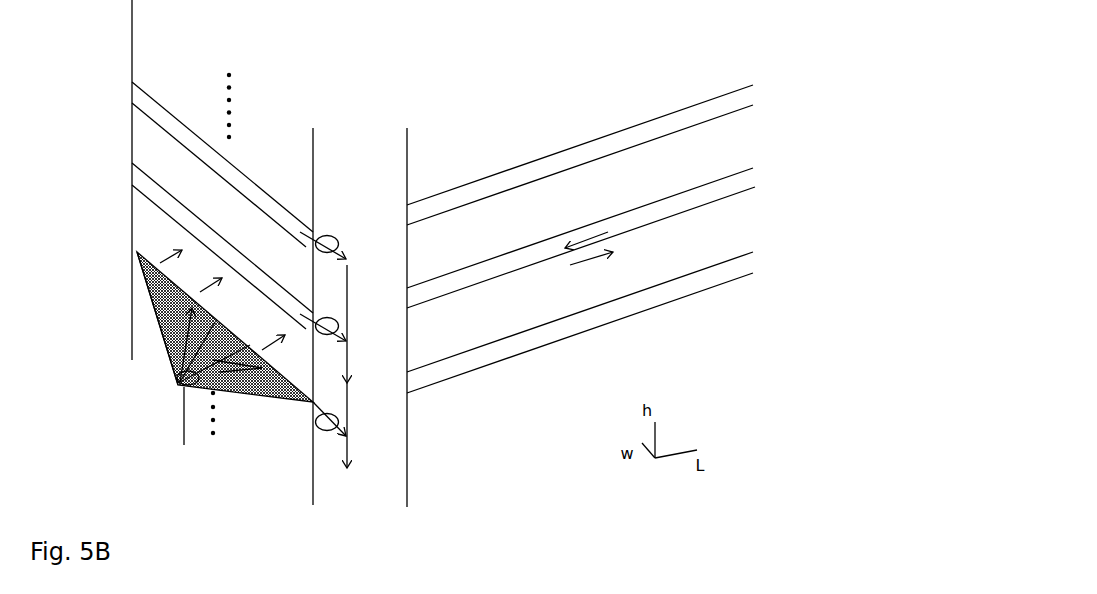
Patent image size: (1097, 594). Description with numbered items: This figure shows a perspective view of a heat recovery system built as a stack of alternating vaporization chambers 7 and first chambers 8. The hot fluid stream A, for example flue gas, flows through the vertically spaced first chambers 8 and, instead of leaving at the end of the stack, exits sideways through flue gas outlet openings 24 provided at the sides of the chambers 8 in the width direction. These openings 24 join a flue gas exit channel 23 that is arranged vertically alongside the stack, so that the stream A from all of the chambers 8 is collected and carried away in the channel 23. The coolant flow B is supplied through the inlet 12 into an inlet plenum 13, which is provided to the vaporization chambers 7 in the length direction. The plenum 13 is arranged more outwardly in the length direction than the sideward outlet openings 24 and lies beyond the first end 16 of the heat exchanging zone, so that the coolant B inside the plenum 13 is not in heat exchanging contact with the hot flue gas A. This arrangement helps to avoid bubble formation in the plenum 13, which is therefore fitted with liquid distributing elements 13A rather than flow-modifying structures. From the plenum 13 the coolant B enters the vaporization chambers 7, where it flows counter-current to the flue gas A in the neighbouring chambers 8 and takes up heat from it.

The vaporization chamber 7 is at (162, 60).
The first chamber 8 is at (135, 173).
The inlet 12 is at (178, 380).
The inlet plenum 13 is at (152, 303).
The liquid distributing element 13A is at (168, 345).
The first end of the heat exchanging zone 16 is at (128, 303).
The flue gas exit channel 23 is at (388, 472).
The flue gas outlet opening 24 is at (316, 430).
The fluid stream A is at (350, 417).
The coolant flow B is at (580, 265).